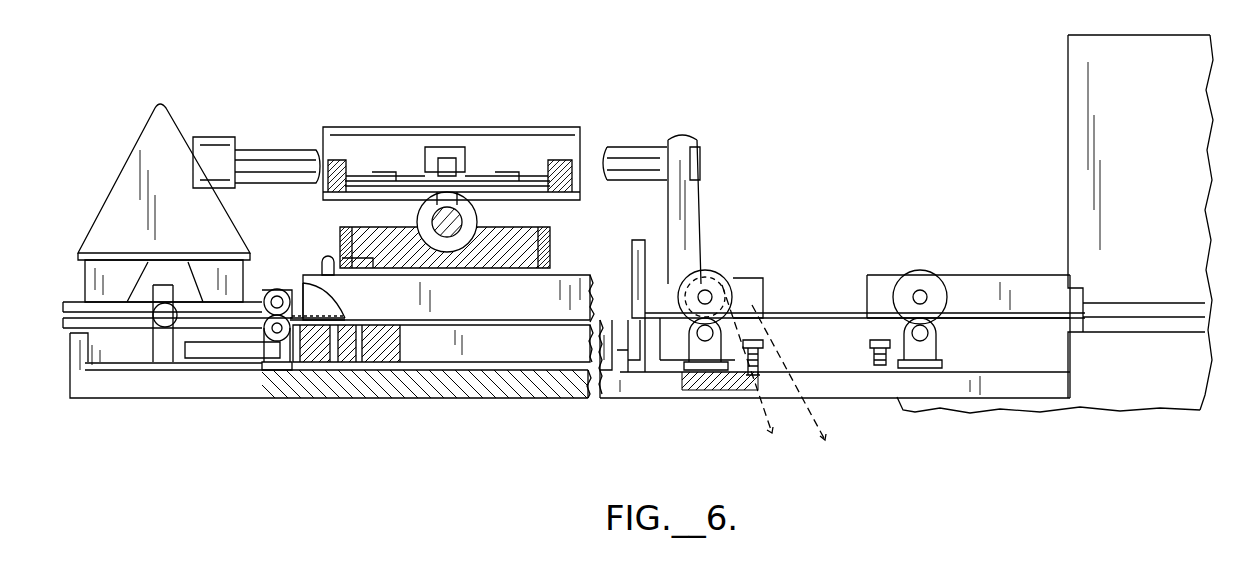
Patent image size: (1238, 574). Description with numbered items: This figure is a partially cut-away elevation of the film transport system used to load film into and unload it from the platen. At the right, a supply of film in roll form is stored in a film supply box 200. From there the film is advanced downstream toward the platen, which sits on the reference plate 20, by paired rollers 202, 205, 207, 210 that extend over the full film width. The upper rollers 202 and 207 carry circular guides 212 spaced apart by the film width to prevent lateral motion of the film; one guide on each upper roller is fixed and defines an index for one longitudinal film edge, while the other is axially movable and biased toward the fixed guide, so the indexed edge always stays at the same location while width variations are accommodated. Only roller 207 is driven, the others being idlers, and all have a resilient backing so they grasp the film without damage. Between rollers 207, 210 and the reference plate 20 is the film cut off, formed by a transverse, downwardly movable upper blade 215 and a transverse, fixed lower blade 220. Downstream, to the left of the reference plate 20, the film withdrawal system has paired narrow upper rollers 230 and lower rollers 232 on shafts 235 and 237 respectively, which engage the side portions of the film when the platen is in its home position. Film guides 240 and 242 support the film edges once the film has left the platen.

The reference plate 20 is at (465, 345).
The film supply box 200 is at (1075, 118).
The upper roller 202 is at (948, 292).
The lower roller 205 is at (938, 330).
The upper roller 207 is at (728, 268).
The lower roller 210 is at (722, 328).
The circular guide 212 is at (708, 285).
The upper blade 215 is at (632, 242).
The lower blade 220 is at (632, 342).
The upper roller 230 is at (272, 290).
The lower roller 232 is at (264, 338).
The shaft 235 is at (266, 316).
The shaft 237 is at (298, 372).
The film guide 240 is at (224, 300).
The film guide 242 is at (218, 322).